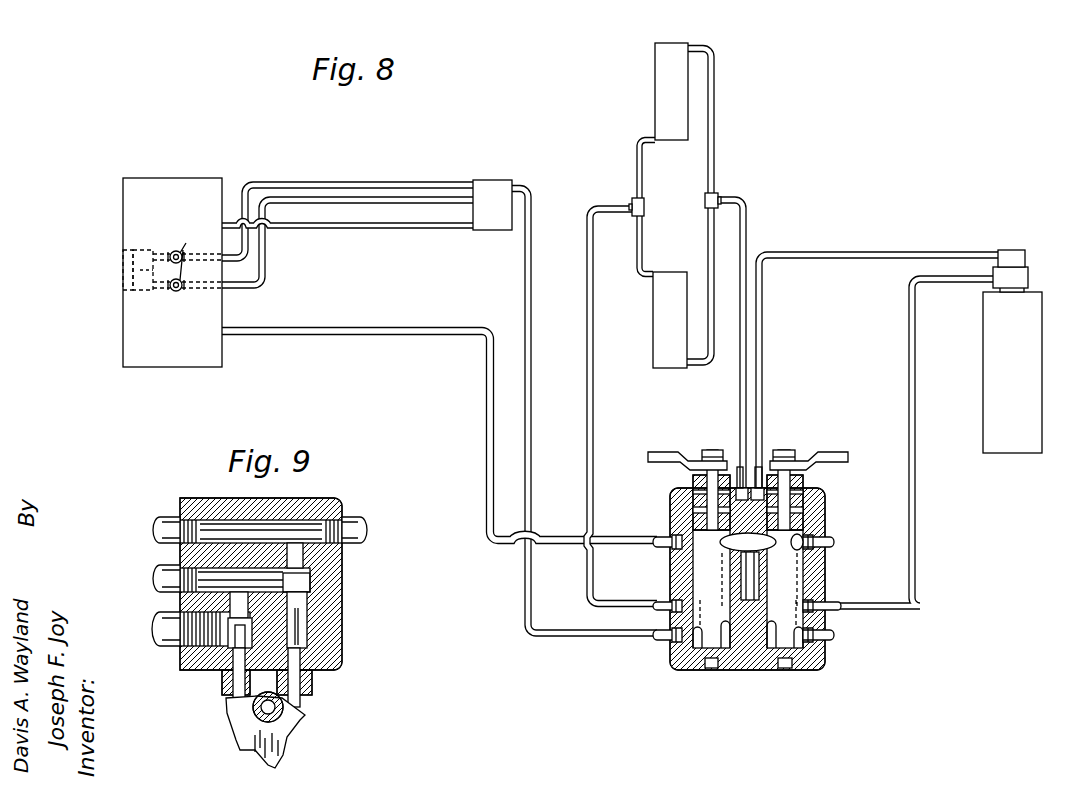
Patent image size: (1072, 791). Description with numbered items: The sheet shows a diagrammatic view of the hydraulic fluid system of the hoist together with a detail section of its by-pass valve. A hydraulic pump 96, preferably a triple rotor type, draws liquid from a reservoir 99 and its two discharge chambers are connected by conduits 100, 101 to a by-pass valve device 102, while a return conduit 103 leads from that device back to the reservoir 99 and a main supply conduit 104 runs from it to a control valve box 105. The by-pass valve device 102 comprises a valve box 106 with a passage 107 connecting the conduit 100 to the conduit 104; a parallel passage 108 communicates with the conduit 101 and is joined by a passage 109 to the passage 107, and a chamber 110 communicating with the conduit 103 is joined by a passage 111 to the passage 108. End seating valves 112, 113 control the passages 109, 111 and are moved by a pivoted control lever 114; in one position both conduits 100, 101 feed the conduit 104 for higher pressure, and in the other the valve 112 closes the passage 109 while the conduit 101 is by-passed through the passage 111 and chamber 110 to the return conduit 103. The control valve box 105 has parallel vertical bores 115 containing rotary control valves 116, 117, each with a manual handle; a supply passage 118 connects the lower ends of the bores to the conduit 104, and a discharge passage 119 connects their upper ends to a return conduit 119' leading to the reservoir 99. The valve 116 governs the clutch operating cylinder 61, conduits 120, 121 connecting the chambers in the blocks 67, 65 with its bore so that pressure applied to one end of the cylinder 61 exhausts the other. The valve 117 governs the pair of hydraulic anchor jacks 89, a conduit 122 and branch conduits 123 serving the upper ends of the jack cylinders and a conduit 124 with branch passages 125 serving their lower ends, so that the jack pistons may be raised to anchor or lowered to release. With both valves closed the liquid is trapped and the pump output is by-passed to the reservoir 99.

In FIG. 8, the operating cylinder 61 is at (1000, 448).
In FIG. 8, the block 65 is at (1029, 275).
In FIG. 8, the block 67 is at (1006, 250).
In FIG. 8, the hydraulic anchor jacks 89 is at (655, 67).
In FIG. 8, the hydraulic pump 96 is at (130, 300).
In FIG. 8, the reservoir 99 is at (178, 362).
In FIG. 8, the conduit 100 is at (330, 183).
In FIG. 9, the conduit 100 is at (155, 516).
In FIG. 8, the conduit 101 is at (340, 202).
In FIG. 9, the conduit 101 is at (155, 570).
In FIG. 8, the by-pass valve device 102 is at (486, 180).
In FIG. 9, the by-pass valve device 102 is at (331, 500).
In FIG. 8, the return conduit 103 is at (402, 228).
In FIG. 9, the return conduit 103 is at (168, 638).
In FIG. 8, the main supply conduit 104 is at (531, 352).
In FIG. 9, the main supply conduit 104 is at (355, 527).
In FIG. 8, the control valve box 105 is at (676, 660).
In FIG. 9, the valve box 106 is at (330, 635).
In FIG. 9, the passage 107 is at (237, 530).
In FIG. 9, the parallel passage 108 is at (212, 573).
In FIG. 9, the passage 109 is at (302, 560).
In FIG. 9, the chamber 110 is at (230, 640).
In FIG. 9, the passage 111 is at (237, 596).
In FIG. 9, the end seating valve 112 is at (310, 590).
In FIG. 8, the end seating valve 113 is at (825, 622).
In FIG. 9, the end seating valve 113 is at (202, 645).
In FIG. 9, the pivoted control lever 114 is at (282, 740).
In FIG. 8, the vertical bores 115 is at (695, 580).
In FIG. 8, the rotary control valve 116 is at (782, 570).
In FIG. 8, the rotary control valve 117 is at (708, 565).
In FIG. 8, the supply passage 118 is at (747, 638).
In FIG. 8, the discharge passage 119 is at (776, 446).
In FIG. 8, the return conduit 119' is at (439, 454).
In FIG. 8, the conduit 120 is at (852, 252).
In FIG. 8, the conduit 121 is at (917, 395).
In FIG. 8, the conduit 122 is at (745, 365).
In FIG. 8, the branch conduits 123 is at (718, 200).
In FIG. 8, the conduit 124 is at (590, 425).
In FIG. 8, the branch passages 125 is at (636, 178).